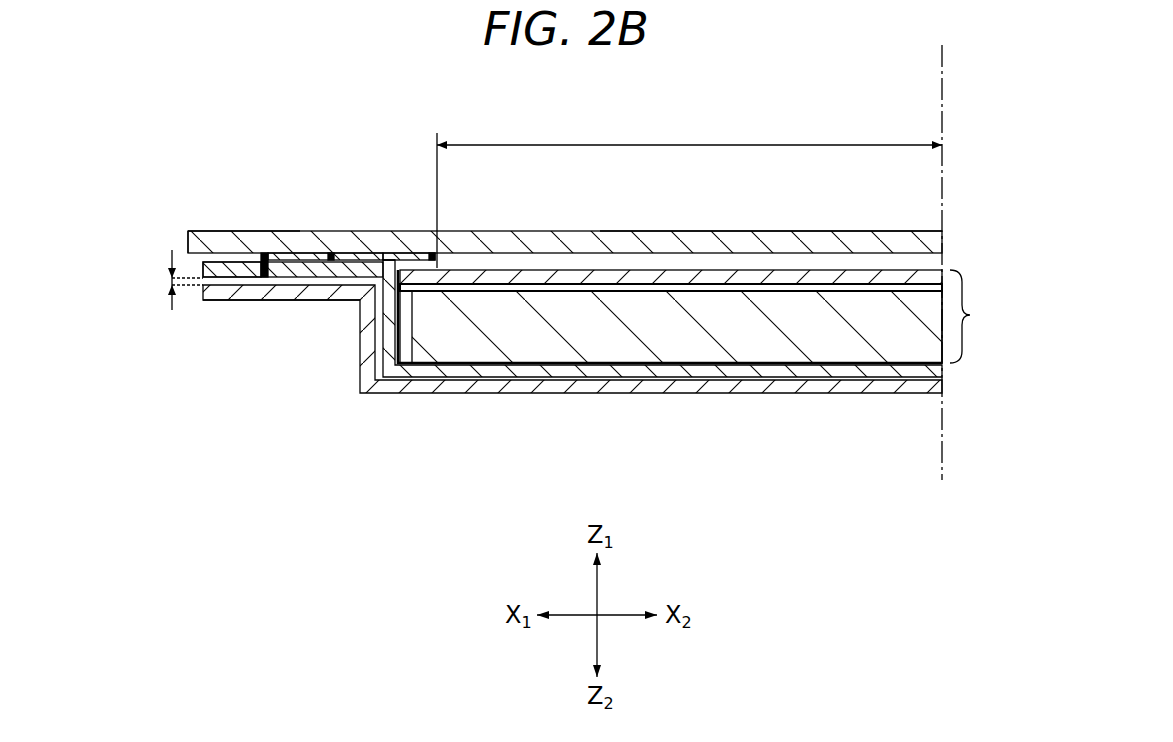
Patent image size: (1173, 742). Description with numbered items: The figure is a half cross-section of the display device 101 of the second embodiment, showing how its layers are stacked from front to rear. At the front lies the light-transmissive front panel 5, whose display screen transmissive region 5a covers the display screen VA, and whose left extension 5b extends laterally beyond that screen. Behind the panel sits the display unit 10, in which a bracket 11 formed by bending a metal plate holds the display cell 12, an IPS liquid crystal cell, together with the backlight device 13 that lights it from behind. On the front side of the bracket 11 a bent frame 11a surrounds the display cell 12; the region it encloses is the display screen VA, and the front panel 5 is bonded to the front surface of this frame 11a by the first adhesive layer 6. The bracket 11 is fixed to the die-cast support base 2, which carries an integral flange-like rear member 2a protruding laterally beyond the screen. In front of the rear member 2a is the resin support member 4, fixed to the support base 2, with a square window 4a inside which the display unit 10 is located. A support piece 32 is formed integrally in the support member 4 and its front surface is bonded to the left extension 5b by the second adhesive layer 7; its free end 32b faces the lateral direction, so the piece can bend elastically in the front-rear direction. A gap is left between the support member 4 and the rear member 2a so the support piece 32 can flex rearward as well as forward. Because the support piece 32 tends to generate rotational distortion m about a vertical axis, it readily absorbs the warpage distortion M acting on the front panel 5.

The display device 101 is at (842, 140).
The display screen VA is at (689, 191).
The front panel 5 is at (581, 231).
The display screen transmissive region 5a is at (686, 231).
The left extension 5b is at (245, 231).
The distortion M is at (205, 233).
The distortion m is at (266, 255).
The support member 4 is at (346, 258).
The window 4a is at (390, 258).
The first adhesive layer 6 is at (433, 254).
The second adhesive layer 7 is at (316, 257).
The support piece 32 is at (303, 270).
The free end 32b is at (250, 272).
The support base 2 is at (455, 385).
The rear member 2a is at (273, 290).
The bracket 11 is at (545, 368).
The frame 11a is at (440, 266).
The display unit 10 is at (705, 316).
The display cell 12 is at (818, 277).
The backlight device 13 is at (735, 340).